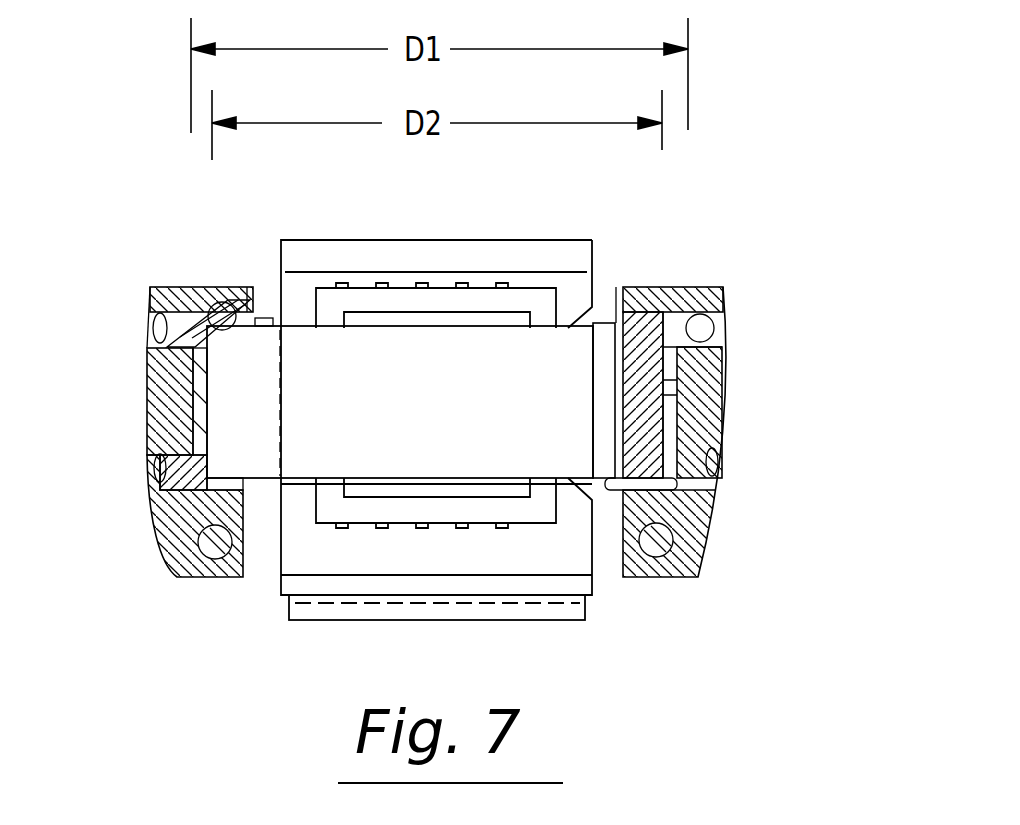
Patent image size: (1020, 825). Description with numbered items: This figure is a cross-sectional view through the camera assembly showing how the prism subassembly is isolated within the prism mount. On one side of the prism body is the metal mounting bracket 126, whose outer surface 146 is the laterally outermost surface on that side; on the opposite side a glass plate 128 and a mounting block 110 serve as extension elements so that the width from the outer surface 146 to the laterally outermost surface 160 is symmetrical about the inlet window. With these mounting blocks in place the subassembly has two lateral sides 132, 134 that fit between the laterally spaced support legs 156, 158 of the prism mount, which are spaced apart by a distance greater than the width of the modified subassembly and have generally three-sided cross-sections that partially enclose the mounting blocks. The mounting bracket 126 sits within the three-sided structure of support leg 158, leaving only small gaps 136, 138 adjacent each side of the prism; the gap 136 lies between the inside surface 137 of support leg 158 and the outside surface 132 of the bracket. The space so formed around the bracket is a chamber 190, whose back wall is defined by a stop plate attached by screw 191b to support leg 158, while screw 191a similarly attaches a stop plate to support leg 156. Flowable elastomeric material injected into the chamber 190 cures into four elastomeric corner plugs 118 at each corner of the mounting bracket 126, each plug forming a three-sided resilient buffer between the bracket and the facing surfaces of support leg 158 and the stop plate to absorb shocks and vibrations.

The mounting block 110 is at (652, 330).
The elastomeric corner plugs 118 is at (185, 305).
The mounting bracket 126 is at (258, 340).
The glass plate 128 is at (610, 308).
The lateral side 132 is at (210, 383).
The lateral side 134 is at (690, 412).
The gap 136 is at (190, 430).
The inside surface 137 is at (213, 407).
The gap 138 is at (690, 367).
The outer surface 146 is at (203, 427).
The support leg 156 is at (713, 287).
The support leg 158 is at (170, 523).
The laterally outermost surface 160 is at (690, 387).
The chamber 190 is at (210, 398).
The screw 191a is at (217, 558).
The screw 191b is at (656, 557).